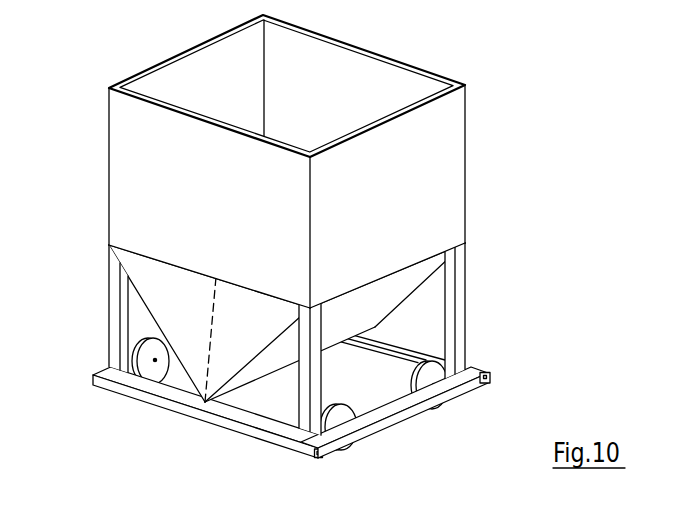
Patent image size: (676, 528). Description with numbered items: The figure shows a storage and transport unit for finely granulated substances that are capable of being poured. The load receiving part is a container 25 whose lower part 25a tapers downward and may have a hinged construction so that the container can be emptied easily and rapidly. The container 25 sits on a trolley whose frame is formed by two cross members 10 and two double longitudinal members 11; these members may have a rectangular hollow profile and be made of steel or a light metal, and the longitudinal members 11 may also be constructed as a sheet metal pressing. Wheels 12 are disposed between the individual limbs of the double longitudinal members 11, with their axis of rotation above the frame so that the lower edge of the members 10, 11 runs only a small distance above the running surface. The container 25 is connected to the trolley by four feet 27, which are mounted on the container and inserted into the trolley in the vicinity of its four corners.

The cross member 10 is at (235, 430).
The double longitudinal member 11 is at (390, 420).
The wheel 12 is at (430, 375).
The container 25 is at (442, 178).
The lower part 25a is at (197, 360).
The foot 27 is at (118, 303).